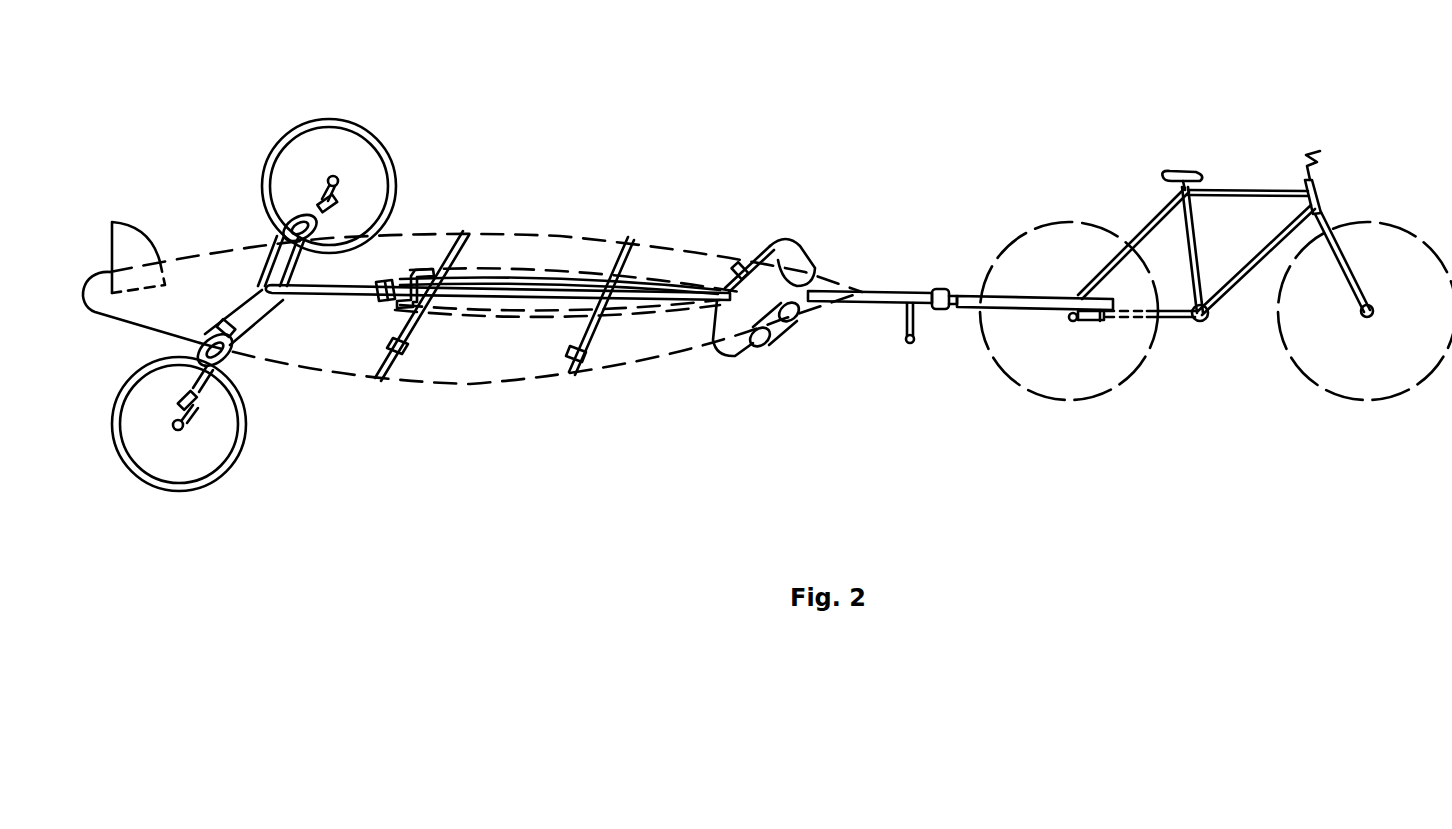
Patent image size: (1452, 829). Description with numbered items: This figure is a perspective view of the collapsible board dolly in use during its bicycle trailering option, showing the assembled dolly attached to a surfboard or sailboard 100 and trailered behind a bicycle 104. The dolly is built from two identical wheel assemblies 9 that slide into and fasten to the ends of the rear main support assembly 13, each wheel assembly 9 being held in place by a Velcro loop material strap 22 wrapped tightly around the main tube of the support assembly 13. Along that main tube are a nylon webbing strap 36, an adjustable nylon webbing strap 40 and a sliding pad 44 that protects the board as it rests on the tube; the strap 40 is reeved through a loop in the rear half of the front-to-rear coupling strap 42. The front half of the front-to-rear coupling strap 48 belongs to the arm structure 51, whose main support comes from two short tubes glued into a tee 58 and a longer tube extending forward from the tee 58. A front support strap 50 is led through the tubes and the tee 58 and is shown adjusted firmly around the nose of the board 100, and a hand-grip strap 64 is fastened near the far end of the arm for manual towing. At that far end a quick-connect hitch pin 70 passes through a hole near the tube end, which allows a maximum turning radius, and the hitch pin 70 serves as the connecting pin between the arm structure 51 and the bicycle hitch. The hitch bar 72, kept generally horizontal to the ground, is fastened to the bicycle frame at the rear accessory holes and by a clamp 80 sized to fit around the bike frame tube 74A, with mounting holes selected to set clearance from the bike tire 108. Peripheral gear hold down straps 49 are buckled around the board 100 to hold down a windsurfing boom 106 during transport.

The wheel assembly 9 is at (377, 76).
The main support assembly 13 is at (210, 205).
The Velcro loop material strap 22 is at (340, 188).
The strap 36 is at (284, 228).
The adjustable strap 40 is at (258, 325).
The rear half of front-to-rear coupling strap 42 is at (347, 300).
The pad 44 is at (240, 352).
The front half of front-to-rear coupling strap 48 is at (510, 292).
The peripheral gear hold down straps 49 is at (482, 240).
The front support strap 50 is at (770, 242).
The arm structure 51 is at (832, 226).
The tee 58 is at (793, 330).
The hand-grip strap 64 is at (905, 340).
The hitch pin 70 is at (927, 318).
The hitch bar 72 is at (1033, 308).
The clamp 80 is at (1100, 322).
The bike frame tube 74A is at (1177, 322).
The surfboard or sailboard 100 is at (655, 352).
The bicycle 104 is at (1247, 143).
The windsurfing boom 106 is at (560, 272).
The bike tire 108 is at (1032, 228).